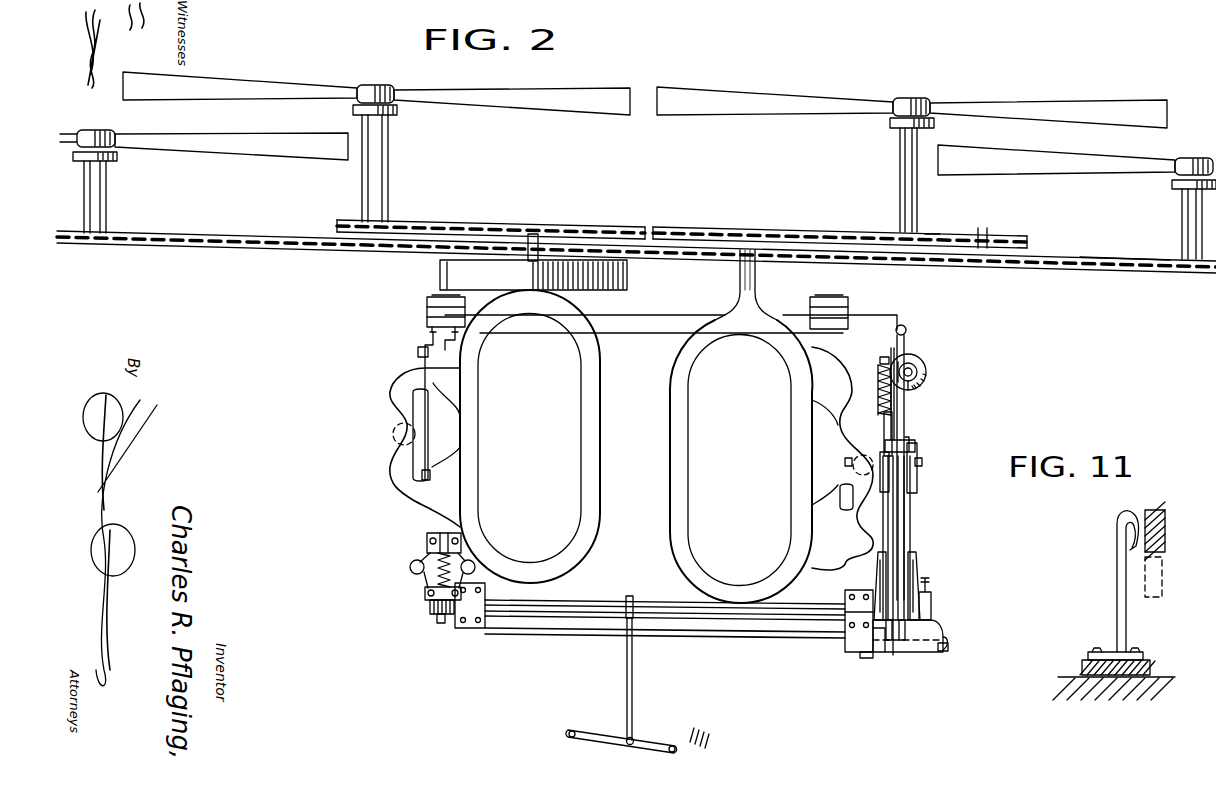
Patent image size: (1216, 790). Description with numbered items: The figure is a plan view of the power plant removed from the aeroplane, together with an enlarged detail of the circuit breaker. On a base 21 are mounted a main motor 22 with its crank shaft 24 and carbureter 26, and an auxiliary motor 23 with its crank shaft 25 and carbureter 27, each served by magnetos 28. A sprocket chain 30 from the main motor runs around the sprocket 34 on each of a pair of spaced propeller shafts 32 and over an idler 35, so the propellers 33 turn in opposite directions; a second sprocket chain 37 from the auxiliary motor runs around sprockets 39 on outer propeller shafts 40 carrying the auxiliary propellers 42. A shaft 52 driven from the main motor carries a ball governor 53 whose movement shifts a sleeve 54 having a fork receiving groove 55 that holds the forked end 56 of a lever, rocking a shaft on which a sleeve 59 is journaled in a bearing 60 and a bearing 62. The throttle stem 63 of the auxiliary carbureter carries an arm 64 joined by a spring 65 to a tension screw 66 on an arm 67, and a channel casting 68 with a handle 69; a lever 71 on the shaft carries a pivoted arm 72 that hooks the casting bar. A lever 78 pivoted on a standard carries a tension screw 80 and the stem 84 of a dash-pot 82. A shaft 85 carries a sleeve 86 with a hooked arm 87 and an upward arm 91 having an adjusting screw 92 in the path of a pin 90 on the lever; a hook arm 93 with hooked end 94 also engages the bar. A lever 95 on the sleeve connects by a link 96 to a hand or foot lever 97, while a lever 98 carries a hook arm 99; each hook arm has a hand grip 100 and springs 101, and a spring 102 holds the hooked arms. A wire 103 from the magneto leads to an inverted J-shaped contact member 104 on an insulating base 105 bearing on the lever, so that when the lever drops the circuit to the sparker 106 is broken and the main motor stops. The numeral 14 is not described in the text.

In FIG. 2, the pin 14 is at (887, 636).
In FIG. 2, the base 21 is at (755, 636).
In FIG. 11, the base 21 is at (1128, 686).
In FIG. 2, the main motor 22 is at (585, 540).
In FIG. 2, the auxiliary motor 23 is at (675, 470).
In FIG. 2, the crank shaft 24 is at (543, 222).
In FIG. 2, the crank shaft 25 is at (757, 282).
In FIG. 2, the carbureter 26 is at (393, 446).
In FIG. 2, the carbureter 27 is at (855, 477).
In FIG. 2, the magnetos 28 is at (428, 310).
In FIG. 2, the sprocket chain 30 is at (831, 229).
In FIG. 2, the propeller shafts 32 is at (370, 88).
In FIG. 2, the propeller 33 is at (260, 84).
In FIG. 2, the sprocket 34 is at (931, 236).
In FIG. 2, the idler 35 is at (1002, 234).
In FIG. 2, the sprocket chain 37 is at (1127, 266).
In FIG. 2, the sprockets 39 is at (95, 246).
In FIG. 2, the propeller shafts 40 is at (97, 133).
In FIG. 2, the auxiliary propellers 42 is at (283, 150).
In FIG. 2, the shaft 52 is at (427, 537).
In FIG. 2, the governor 53 is at (410, 568).
In FIG. 2, the sleeve 54 is at (425, 593).
In FIG. 2, the fork receiving groove 55 is at (437, 616).
In FIG. 2, the forked end 56 is at (429, 606).
In FIG. 2, the sleeve 59 is at (560, 617).
In FIG. 2, the bearing 60 is at (477, 629).
In FIG. 2, the bearing 62 is at (850, 622).
In FIG. 2, the stem 63 is at (923, 462).
In FIG. 2, the arm 64 is at (893, 420).
In FIG. 2, the spring 65 is at (878, 384).
In FIG. 2, the tension screw 66 is at (881, 360).
In FIG. 2, the arm 67 is at (896, 397).
In FIG. 2, the casting 68 is at (917, 494).
In FIG. 2, the handle 69 is at (918, 455).
In FIG. 2, the lever 71 is at (904, 636).
In FIG. 2, the arm 72 is at (900, 532).
In FIG. 2, the lever 78 is at (905, 348).
In FIG. 11, the lever 78 is at (1165, 514).
In FIG. 2, the tension screw 80 is at (896, 336).
In FIG. 2, the dash-pot 82 is at (926, 376).
In FIG. 2, the stem 84 is at (926, 367).
In FIG. 2, the shaft 85 is at (944, 651).
In FIG. 2, the sleeve 86 is at (876, 642).
In FIG. 2, the arm 87 is at (893, 645).
In FIG. 2, the pin 90 is at (935, 623).
In FIG. 2, the arm 91 is at (931, 604).
In FIG. 2, the adjusting screw 92 is at (930, 581).
In FIG. 2, the hook arm 93 is at (911, 528).
In FIG. 2, the hooked end 94 is at (911, 444).
In FIG. 2, the lever 95 is at (625, 618).
In FIG. 2, the link 96 is at (634, 685).
In FIG. 2, the hand or foot lever 97 is at (598, 731).
In FIG. 2, the lever 98 is at (862, 626).
In FIG. 2, the hook arm 99 is at (884, 522).
In FIG. 2, the hand grip 100 is at (909, 438).
In FIG. 2, the springs 101 is at (875, 570).
In FIG. 2, the spring 102 is at (950, 640).
In FIG. 2, the wire 103 is at (652, 337).
In FIG. 11, the contact member 104 is at (1134, 540).
In FIG. 11, the base 105 is at (1085, 664).
In FIG. 2, the sparker 106 is at (418, 353).